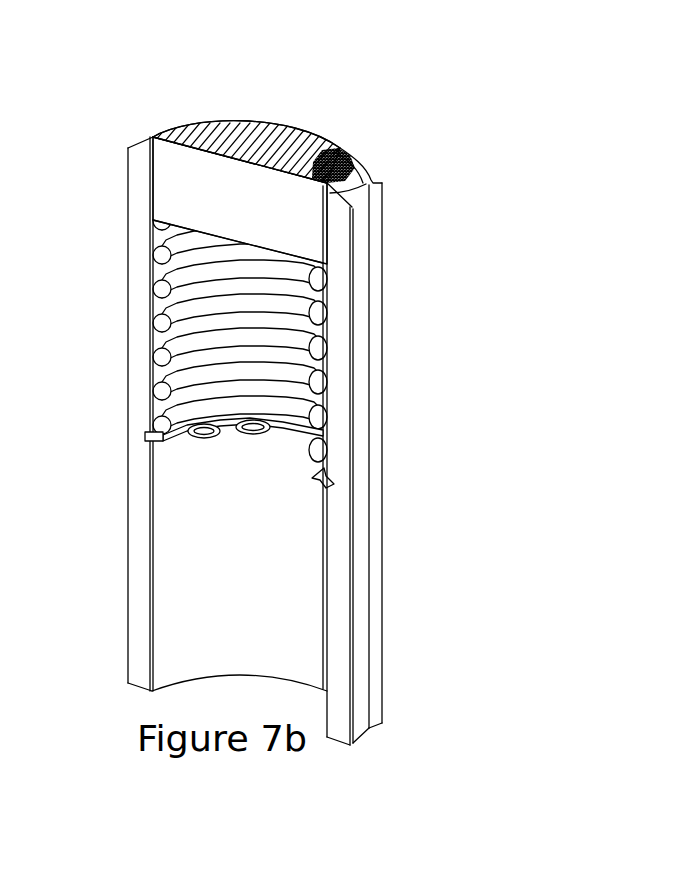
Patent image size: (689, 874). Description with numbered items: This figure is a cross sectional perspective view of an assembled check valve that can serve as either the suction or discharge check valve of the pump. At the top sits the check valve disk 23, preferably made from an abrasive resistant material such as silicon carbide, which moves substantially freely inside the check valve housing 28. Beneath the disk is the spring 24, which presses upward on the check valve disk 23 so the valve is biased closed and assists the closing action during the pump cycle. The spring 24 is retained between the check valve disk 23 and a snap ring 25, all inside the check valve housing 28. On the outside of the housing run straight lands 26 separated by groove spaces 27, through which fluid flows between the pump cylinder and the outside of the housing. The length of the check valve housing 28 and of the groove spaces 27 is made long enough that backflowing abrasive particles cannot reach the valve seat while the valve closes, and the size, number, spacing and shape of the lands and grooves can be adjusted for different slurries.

The check valve disk 23 is at (262, 174).
The spring 24 is at (193, 327).
The snap ring 25 is at (195, 433).
The straight lands 26 is at (405, 430).
The groove spaces 27 is at (393, 462).
The check valve housing 28 is at (393, 464).